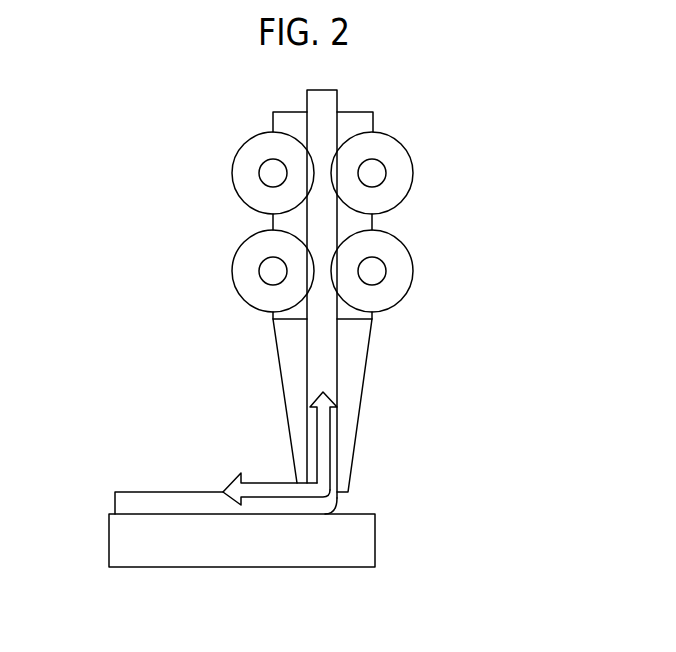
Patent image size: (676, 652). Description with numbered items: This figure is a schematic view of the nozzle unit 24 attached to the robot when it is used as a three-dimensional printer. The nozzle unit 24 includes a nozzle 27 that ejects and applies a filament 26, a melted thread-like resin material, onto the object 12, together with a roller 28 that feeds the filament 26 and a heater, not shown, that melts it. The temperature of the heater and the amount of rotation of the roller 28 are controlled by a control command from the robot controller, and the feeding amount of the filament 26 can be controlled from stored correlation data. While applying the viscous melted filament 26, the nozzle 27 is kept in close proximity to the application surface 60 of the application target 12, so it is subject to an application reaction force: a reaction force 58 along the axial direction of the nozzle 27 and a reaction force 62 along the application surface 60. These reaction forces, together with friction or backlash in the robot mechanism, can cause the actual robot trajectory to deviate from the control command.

The object 12 is at (138, 553).
The nozzle unit 24 is at (446, 226).
The filament 26 is at (140, 492).
The nozzle 27 is at (354, 450).
The roller 28 is at (234, 173).
The reaction force 58 is at (326, 427).
The application surface 60 is at (357, 513).
The reaction force 62 is at (262, 492).